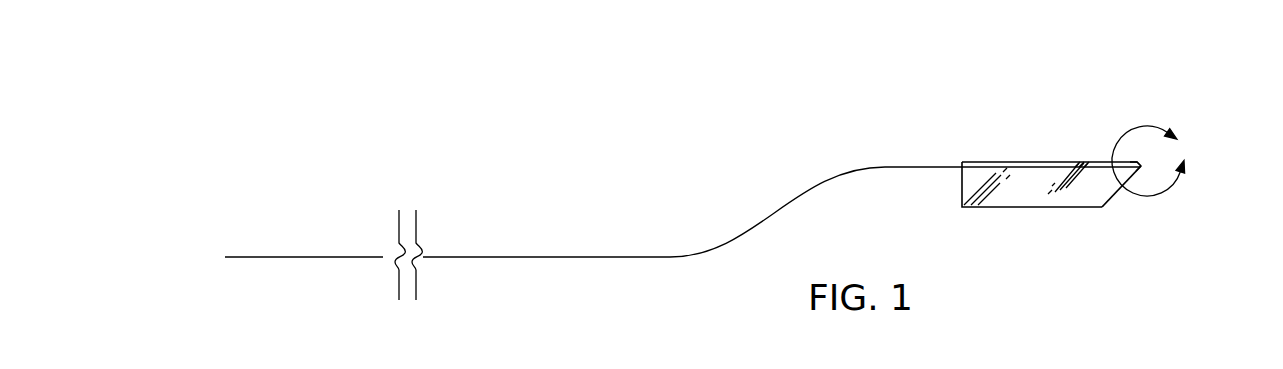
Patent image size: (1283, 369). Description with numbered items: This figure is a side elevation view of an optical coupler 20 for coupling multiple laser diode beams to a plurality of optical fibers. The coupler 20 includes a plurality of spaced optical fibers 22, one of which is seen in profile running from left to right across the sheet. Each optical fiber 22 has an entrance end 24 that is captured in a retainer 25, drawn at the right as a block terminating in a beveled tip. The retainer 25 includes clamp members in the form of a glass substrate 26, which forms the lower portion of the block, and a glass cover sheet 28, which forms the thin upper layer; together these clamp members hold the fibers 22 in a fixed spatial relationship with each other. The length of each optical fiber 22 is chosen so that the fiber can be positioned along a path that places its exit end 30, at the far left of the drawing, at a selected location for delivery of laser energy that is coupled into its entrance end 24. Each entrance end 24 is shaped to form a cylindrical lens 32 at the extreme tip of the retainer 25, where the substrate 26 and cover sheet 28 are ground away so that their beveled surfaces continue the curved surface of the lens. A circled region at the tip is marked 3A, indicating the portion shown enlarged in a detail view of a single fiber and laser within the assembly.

The optical coupler 20 is at (1081, 127).
The optical fiber 22 is at (818, 182).
The entrance end 24 is at (1135, 162).
The retainer 25 is at (1103, 208).
The glass substrate 26 is at (1043, 207).
The glass cover sheet 28 is at (1015, 161).
The exit end 30 is at (235, 256).
The cylindrical lens 32 is at (1146, 168).
The detail view region 3A is at (1158, 161).